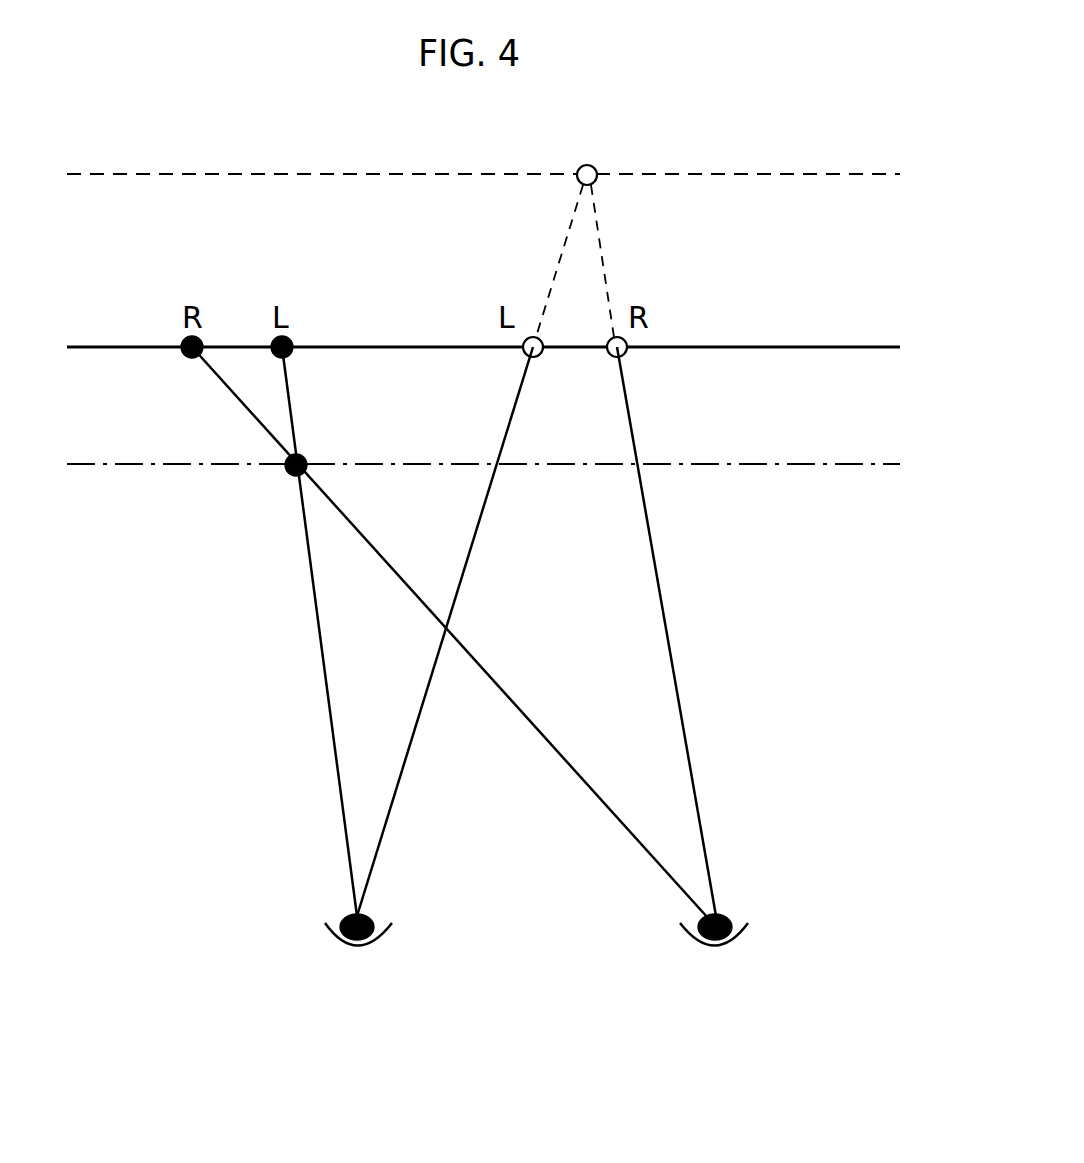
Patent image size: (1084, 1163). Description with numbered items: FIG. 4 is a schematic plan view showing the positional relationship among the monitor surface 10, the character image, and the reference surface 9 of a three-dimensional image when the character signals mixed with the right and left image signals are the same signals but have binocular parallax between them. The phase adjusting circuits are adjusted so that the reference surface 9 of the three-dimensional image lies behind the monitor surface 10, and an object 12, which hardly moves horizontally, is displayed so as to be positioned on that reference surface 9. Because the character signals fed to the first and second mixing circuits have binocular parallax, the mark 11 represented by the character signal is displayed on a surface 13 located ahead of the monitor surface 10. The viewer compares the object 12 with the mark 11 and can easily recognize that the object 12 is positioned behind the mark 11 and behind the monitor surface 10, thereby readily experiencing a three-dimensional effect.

The reference surface 9 is at (842, 173).
The monitor surface 10 is at (842, 346).
The mark 11 is at (303, 457).
The object 12 is at (594, 167).
The surface 13 is at (842, 463).